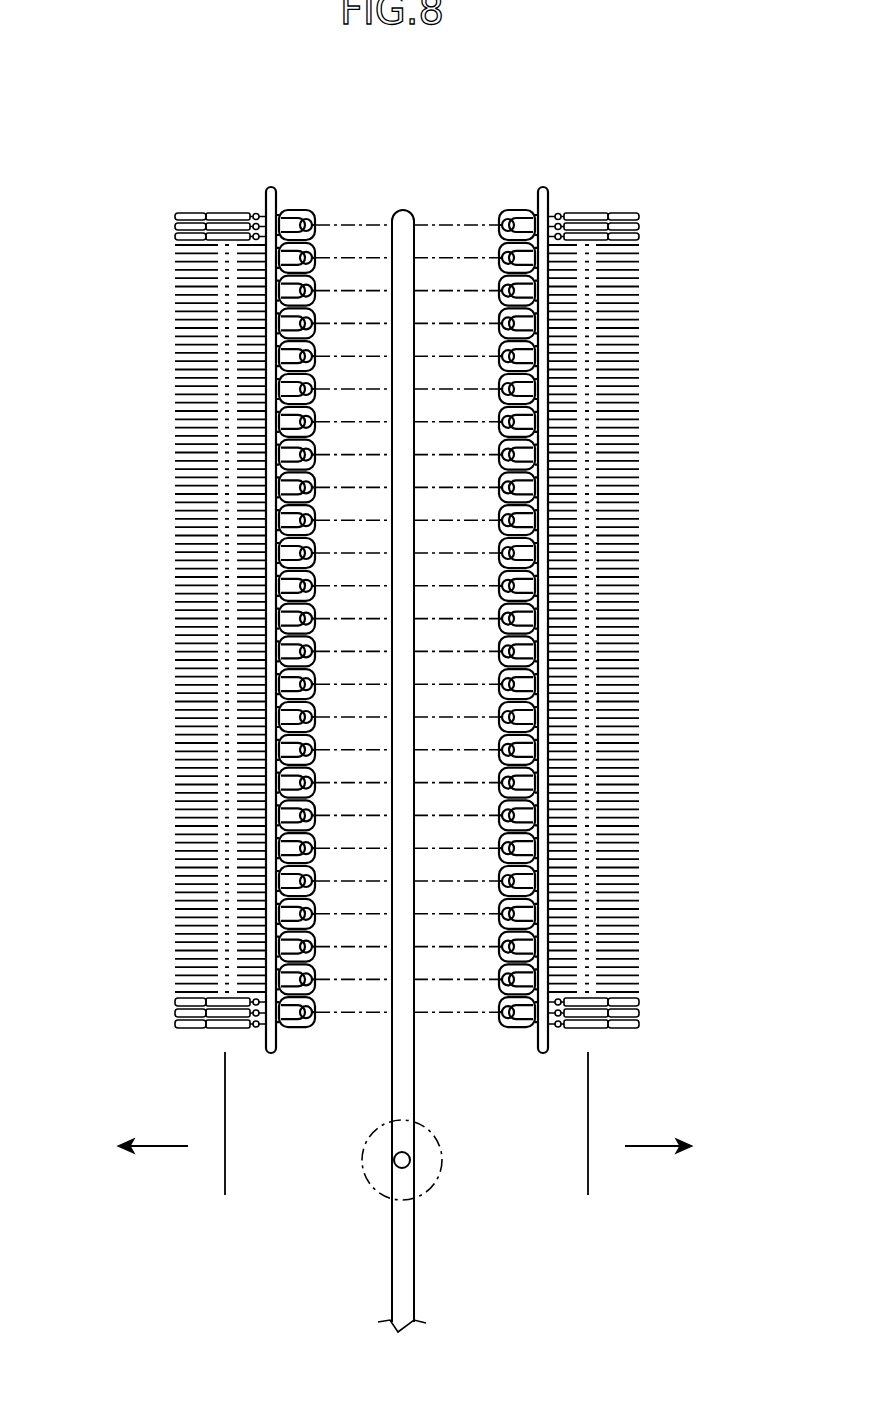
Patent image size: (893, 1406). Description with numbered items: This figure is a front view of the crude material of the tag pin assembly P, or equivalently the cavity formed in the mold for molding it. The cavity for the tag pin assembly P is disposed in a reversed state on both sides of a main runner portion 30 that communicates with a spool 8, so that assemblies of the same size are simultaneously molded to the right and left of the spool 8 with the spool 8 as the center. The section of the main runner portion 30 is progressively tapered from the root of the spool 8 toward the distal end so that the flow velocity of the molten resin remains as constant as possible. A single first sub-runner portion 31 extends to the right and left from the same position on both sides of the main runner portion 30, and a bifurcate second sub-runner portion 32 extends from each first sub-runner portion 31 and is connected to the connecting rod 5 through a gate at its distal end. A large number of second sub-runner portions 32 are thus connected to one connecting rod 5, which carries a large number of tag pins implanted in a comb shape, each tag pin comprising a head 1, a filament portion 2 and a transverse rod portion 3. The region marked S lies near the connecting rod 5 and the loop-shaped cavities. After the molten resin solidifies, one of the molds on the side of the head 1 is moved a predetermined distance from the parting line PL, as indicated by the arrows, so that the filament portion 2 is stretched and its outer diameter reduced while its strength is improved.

The head 1 is at (185, 212).
The filament portion 2 is at (218, 212).
The transverse rod portion 3 is at (251, 212).
The connecting rod 5 is at (270, 782).
The spool 8 is at (437, 1180).
The main runner portion 30 is at (391, 225).
The first sub-runner portion 31 is at (437, 225).
The second sub-runner portion 32 is at (513, 210).
The stitch S is at (311, 186).
The tag pin assembly P is at (150, 456).
The parting line PL is at (225, 1083).